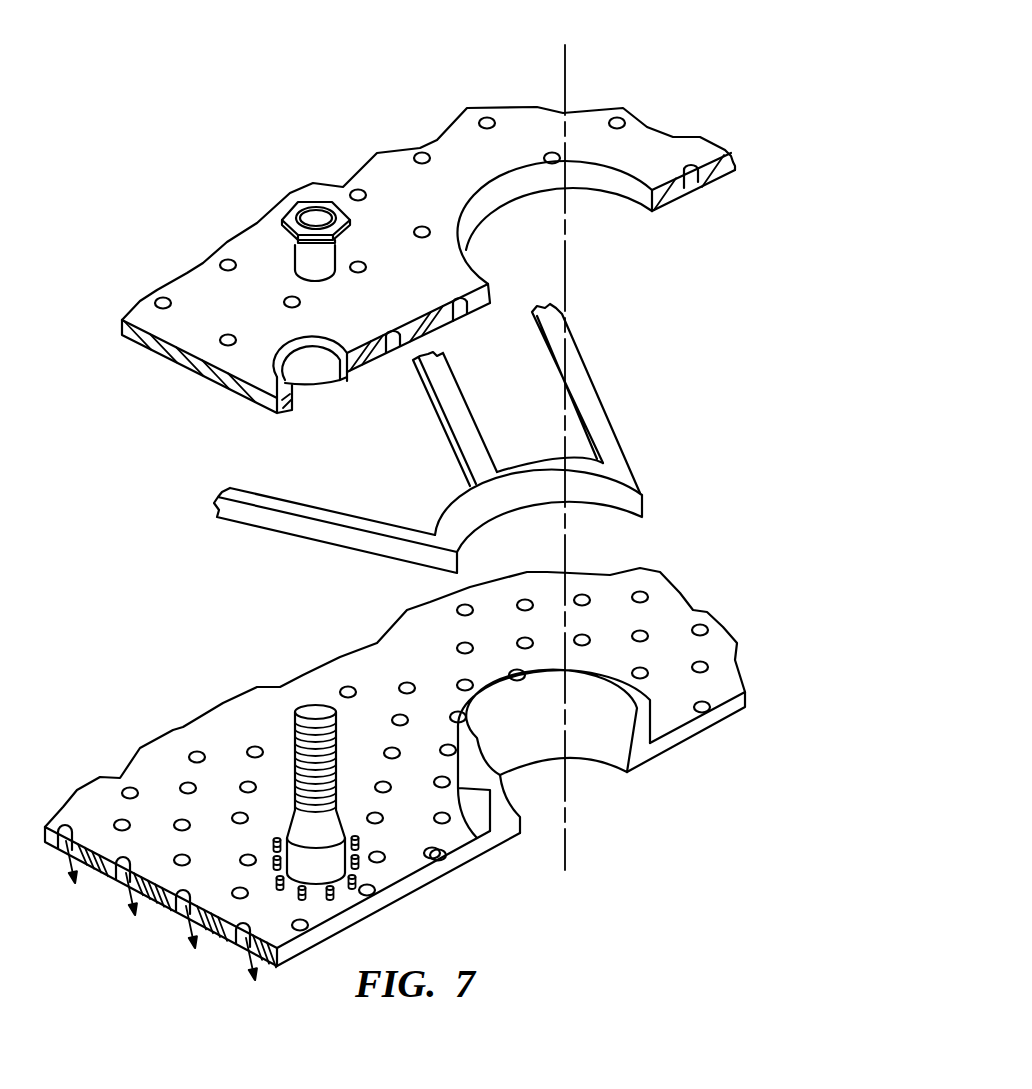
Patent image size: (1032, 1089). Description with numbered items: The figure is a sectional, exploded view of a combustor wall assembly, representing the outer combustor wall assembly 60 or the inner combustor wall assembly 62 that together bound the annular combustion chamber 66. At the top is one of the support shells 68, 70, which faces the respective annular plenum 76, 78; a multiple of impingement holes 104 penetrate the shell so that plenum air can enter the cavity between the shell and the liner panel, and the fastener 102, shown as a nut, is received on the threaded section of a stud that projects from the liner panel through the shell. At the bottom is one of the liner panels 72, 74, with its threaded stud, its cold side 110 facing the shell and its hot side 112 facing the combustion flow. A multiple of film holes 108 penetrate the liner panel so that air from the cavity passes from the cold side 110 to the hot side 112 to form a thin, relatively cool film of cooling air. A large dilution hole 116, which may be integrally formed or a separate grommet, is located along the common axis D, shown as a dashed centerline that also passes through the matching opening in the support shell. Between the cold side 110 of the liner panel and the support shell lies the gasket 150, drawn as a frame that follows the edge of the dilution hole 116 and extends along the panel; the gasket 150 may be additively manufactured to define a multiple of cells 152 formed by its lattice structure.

The outer combustor wall assembly 60 is at (464, 216).
The inner combustor wall assembly 62 is at (464, 216).
The combustion chamber 66 is at (738, 740).
The support shell 68 is at (464, 216).
The support shell 70 is at (464, 216).
The liner panel 72 is at (441, 774).
The liner panel 74 is at (441, 774).
The annular plenum 76 is at (464, 216).
The annular plenum 78 is at (749, 112).
The fastener 102 is at (326, 202).
The impingement hole 104 is at (425, 152).
The film hole 108 is at (702, 662).
The cold side 110 is at (398, 860).
The hot side 112 is at (368, 915).
The dilution hole 116 is at (588, 776).
The gasket 150 is at (593, 412).
The cell 152 is at (441, 774).
The common axis D is at (566, 257).